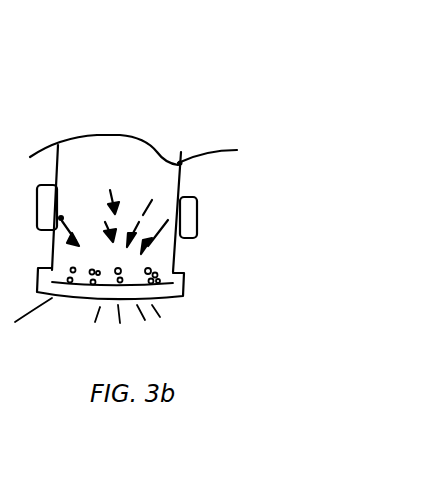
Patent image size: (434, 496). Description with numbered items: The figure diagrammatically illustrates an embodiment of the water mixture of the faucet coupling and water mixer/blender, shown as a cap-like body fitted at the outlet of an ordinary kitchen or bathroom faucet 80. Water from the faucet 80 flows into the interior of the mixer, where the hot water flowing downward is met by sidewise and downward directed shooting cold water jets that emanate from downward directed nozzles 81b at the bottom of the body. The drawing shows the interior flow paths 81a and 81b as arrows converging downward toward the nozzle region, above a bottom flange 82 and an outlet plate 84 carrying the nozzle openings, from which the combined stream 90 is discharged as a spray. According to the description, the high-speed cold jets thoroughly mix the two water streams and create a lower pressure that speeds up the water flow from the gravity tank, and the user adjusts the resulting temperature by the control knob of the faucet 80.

The faucet 80 is at (197, 207).
The first flow path 81a is at (61, 217).
The downward directed nozzles 81b is at (183, 182).
The flange 82 is at (170, 296).
The outlet plate 84 is at (82, 292).
The spray 90 is at (158, 312).